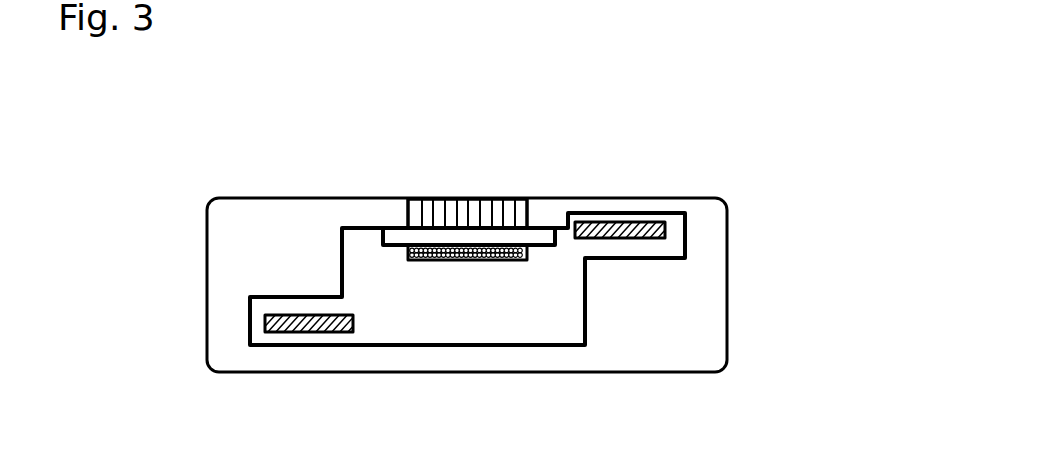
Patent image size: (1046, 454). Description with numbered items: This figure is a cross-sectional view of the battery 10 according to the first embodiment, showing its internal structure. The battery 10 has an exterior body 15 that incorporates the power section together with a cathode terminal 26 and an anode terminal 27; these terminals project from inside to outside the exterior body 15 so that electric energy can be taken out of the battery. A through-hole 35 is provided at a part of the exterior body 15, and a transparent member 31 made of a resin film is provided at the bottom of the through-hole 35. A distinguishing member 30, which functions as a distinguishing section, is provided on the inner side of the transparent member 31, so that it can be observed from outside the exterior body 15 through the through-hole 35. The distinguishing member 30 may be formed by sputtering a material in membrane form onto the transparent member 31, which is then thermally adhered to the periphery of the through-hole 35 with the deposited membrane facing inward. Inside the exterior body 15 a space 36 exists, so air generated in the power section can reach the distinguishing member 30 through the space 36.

The battery 10 is at (471, 91).
The exterior body 15 is at (698, 327).
The cathode terminal 26 is at (268, 325).
The anode terminal 27 is at (663, 226).
The distinguishing member 30 is at (518, 246).
The transparent member 31 is at (490, 237).
The through-hole 35 is at (499, 184).
The space 36 is at (363, 254).